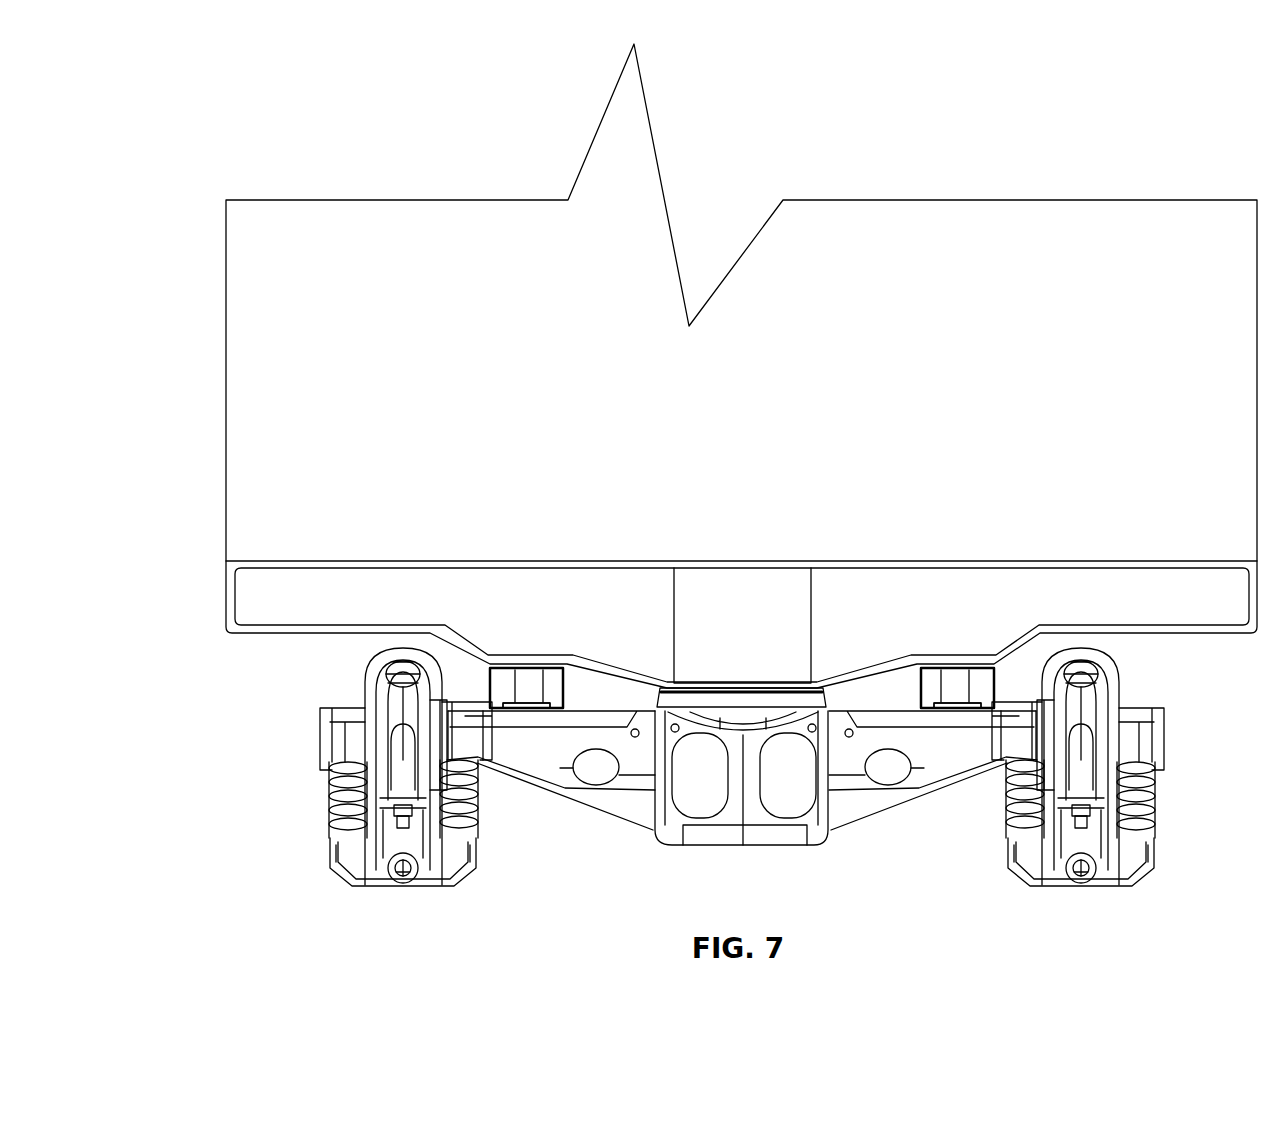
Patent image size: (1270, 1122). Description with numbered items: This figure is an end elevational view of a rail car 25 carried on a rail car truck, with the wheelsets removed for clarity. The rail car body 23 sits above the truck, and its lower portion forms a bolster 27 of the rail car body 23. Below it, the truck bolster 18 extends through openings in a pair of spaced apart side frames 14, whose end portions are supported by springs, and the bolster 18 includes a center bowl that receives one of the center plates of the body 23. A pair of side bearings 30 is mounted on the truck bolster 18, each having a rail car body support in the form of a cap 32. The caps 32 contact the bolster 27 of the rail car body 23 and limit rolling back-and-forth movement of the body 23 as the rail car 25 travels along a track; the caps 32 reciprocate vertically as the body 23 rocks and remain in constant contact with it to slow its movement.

The side frame 14 is at (372, 682).
The bolster 18 is at (628, 805).
The rail car body 23 is at (248, 523).
The rail car 25 is at (698, 375).
The bolster of the rail car body 27 is at (248, 598).
The side bearing 30 is at (527, 693).
The cap 32 is at (503, 668).